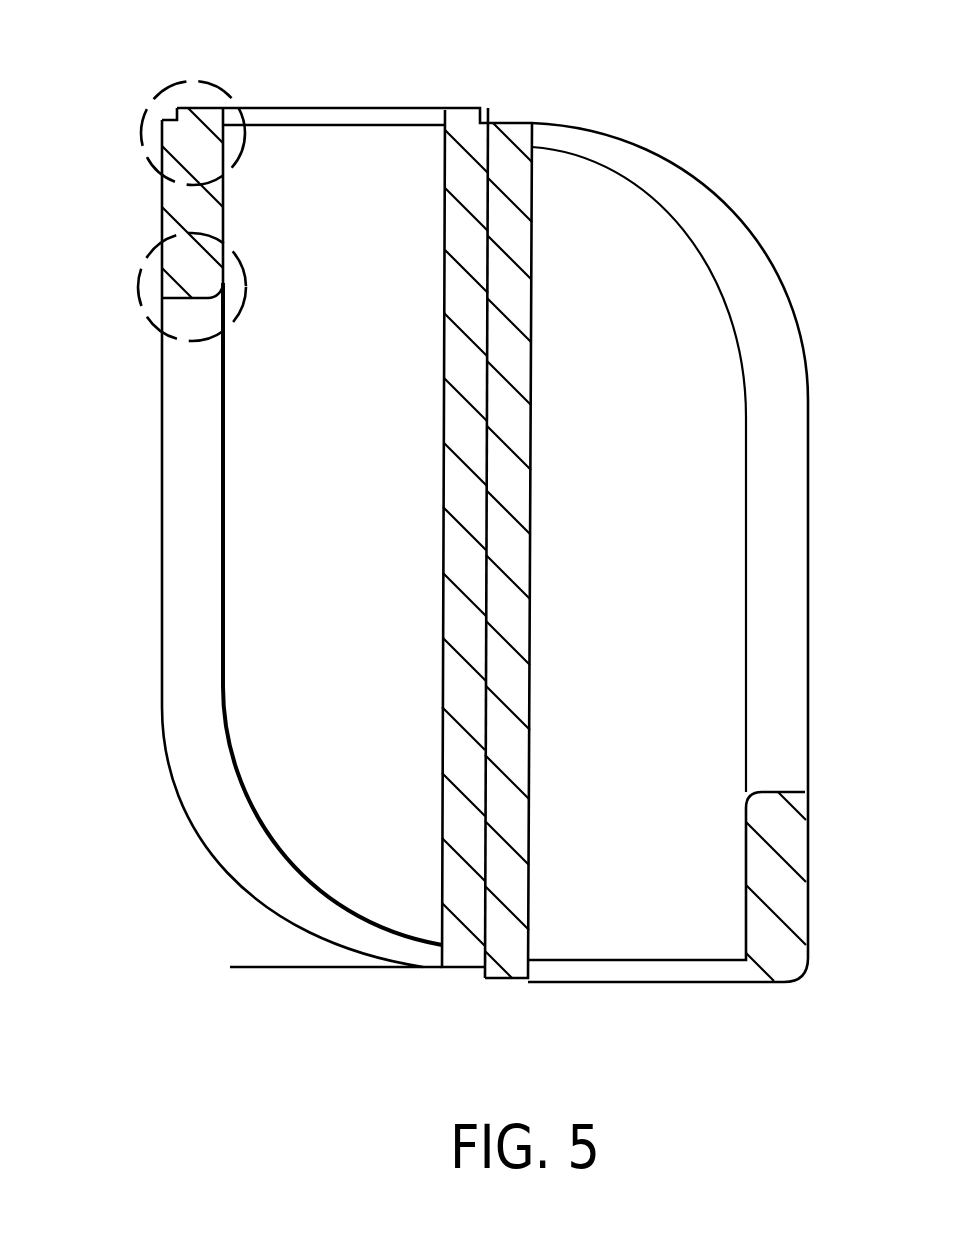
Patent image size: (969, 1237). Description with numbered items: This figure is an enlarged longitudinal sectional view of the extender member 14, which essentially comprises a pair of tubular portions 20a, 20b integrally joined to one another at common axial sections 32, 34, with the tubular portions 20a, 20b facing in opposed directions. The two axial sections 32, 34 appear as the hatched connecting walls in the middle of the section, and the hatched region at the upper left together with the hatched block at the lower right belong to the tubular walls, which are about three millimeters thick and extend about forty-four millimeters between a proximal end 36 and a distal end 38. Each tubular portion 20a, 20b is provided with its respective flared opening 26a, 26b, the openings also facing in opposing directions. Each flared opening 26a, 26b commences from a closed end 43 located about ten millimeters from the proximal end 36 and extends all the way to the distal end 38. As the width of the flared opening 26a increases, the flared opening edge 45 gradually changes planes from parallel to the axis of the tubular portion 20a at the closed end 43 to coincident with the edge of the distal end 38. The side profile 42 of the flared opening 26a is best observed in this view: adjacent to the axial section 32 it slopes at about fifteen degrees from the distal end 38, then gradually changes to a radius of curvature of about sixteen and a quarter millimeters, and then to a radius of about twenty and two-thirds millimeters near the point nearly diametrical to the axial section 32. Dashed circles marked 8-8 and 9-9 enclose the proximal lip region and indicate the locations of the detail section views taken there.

The extender member 14 is at (675, 1039).
The tubular portion 20a is at (352, 448).
The tubular portion 20b is at (640, 453).
The flared opening 26a is at (196, 900).
The flared opening 26b is at (802, 210).
The axial section 32 is at (463, 967).
The axial section 34 is at (503, 978).
The proximal end 36 is at (202, 107).
The distal end 38 is at (273, 967).
The side profile 42 is at (112, 782).
The closed end 43 is at (192, 302).
The flared opening edge 45 is at (180, 562).
The section line 8-8 is at (148, 108).
The section line 9-9 is at (140, 288).